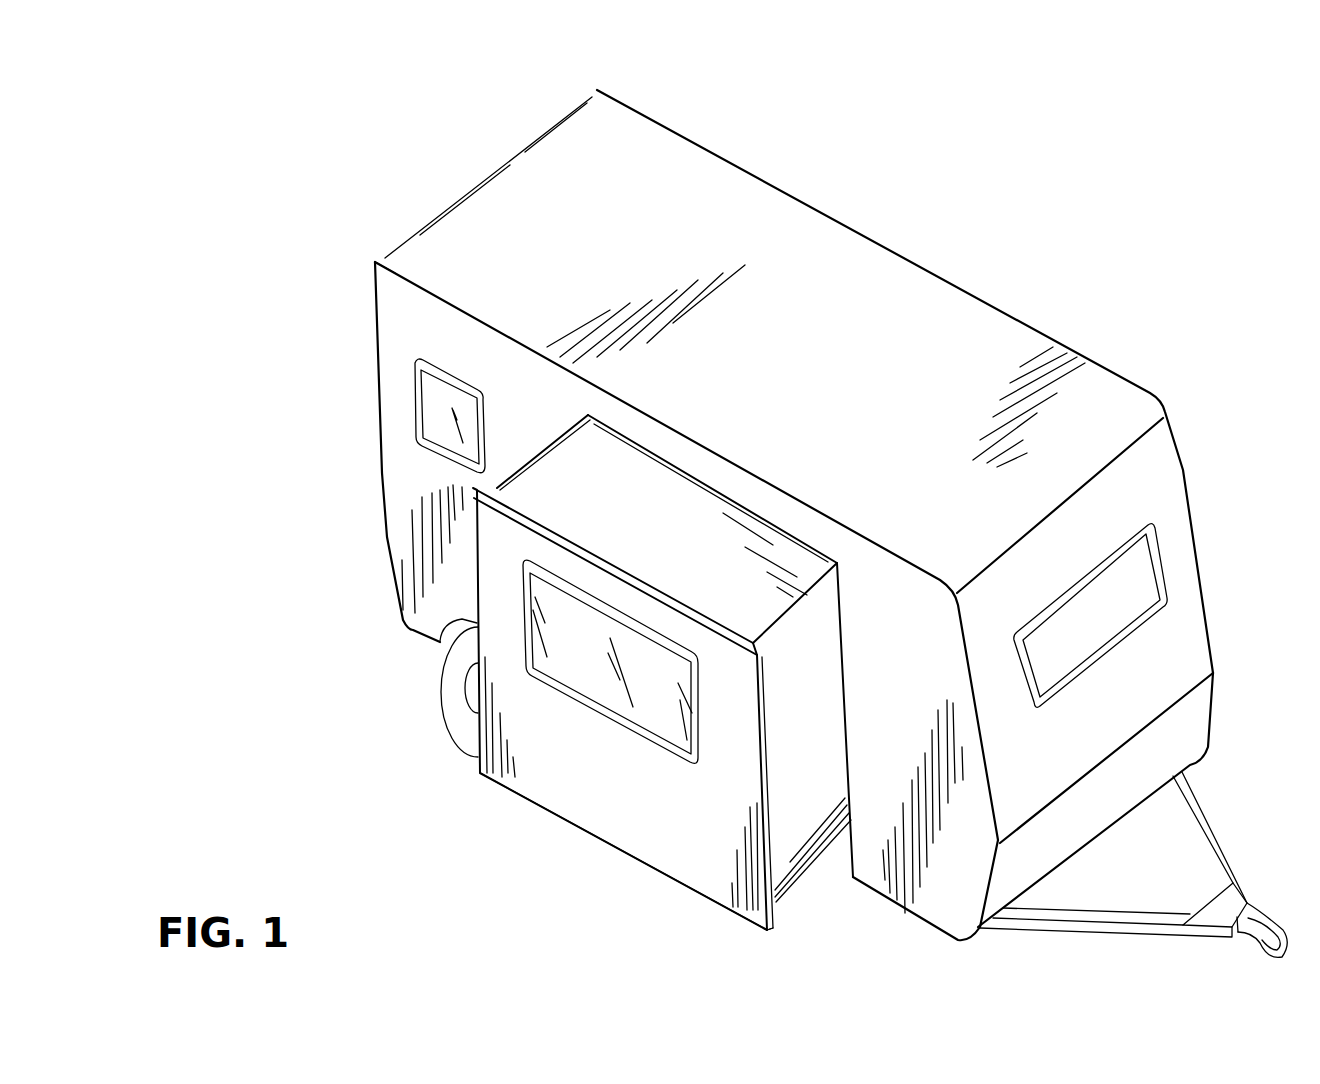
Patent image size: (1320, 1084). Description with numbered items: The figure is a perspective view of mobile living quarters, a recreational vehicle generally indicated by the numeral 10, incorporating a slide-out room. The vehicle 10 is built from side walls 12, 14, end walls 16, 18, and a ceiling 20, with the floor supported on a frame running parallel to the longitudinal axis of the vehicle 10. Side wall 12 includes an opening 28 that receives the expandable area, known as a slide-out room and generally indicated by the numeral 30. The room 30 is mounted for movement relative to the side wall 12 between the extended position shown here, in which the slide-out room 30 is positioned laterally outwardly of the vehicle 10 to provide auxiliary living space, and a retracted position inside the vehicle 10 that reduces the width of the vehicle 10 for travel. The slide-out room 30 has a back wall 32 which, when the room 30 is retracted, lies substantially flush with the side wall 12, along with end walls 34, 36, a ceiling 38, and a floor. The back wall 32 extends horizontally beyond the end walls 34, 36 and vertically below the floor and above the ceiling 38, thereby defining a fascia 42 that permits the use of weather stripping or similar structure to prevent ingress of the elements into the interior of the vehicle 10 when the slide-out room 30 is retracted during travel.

The mobile living quarters 10 is at (1058, 265).
The side wall 12 is at (395, 463).
The side wall 14 is at (876, 241).
The end wall 16 is at (1157, 690).
The end wall 18 is at (477, 178).
The ceiling 20 is at (421, 258).
The opening 28 is at (702, 491).
The slide-out room 30 is at (557, 787).
The back wall 32 is at (617, 818).
The end wall 34 is at (797, 840).
The end wall 36 is at (543, 453).
The ceiling 38 is at (679, 553).
The fascia 42 is at (773, 927).